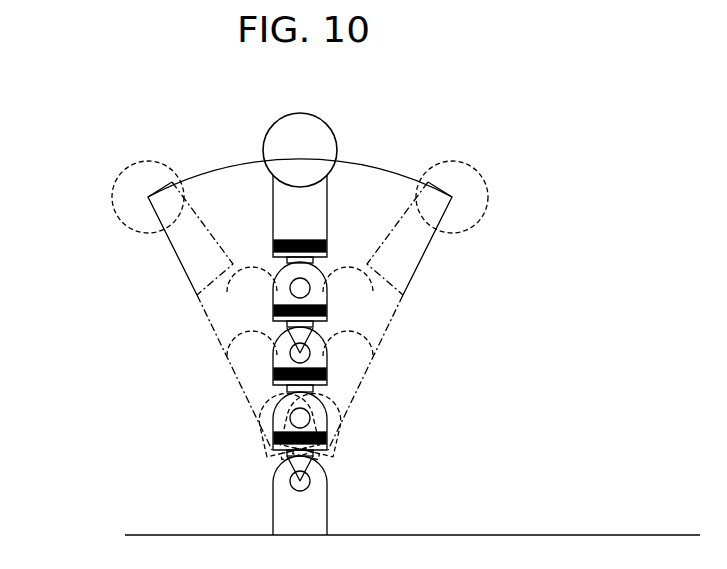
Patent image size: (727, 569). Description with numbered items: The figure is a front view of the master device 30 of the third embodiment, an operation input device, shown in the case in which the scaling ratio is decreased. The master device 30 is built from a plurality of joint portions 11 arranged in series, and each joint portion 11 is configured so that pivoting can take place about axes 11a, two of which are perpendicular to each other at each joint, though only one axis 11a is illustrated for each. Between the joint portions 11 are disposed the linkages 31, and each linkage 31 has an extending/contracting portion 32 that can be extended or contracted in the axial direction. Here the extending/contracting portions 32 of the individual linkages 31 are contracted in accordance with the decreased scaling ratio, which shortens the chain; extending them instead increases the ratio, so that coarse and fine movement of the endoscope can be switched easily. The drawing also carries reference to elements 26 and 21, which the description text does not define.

The joint portion 11 is at (256, 293).
The axis 11a is at (292, 281).
The floor surface 21 is at (470, 535).
The ball 26 is at (317, 116).
The master device 30 is at (542, 162).
The linkage 31 is at (327, 205).
The extending/contracting portion 32 is at (327, 246).